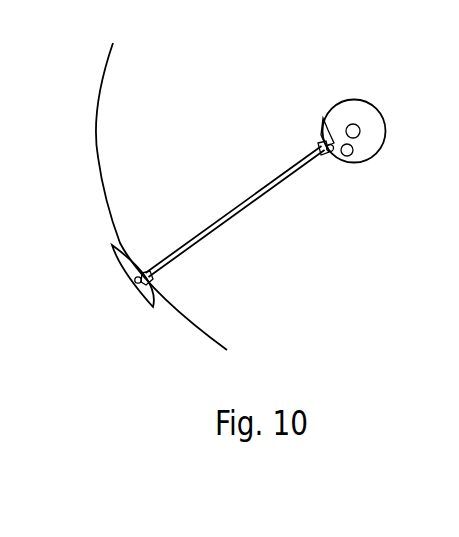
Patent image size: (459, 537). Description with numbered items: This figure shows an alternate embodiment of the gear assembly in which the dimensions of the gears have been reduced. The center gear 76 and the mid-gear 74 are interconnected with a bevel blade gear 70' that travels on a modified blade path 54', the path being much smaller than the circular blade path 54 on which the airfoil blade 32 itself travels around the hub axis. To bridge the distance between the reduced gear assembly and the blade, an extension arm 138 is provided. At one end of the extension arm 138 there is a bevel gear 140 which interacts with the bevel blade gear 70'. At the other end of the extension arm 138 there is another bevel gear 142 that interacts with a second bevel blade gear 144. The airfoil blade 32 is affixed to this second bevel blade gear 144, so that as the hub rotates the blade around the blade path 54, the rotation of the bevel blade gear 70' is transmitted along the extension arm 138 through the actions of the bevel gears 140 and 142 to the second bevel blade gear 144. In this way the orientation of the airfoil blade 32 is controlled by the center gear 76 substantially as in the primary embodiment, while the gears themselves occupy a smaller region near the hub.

The blade path 54 is at (161, 196).
The airfoil blade 32 is at (128, 272).
The second bevel blade gear 144 is at (136, 286).
The bevel gear 142 is at (150, 278).
The extension arm 138 is at (233, 217).
The bevel gear 140 is at (312, 163).
The bevel blade gear 70' is at (294, 123).
The modified blade path 54' is at (385, 131).
The center gear 76 is at (356, 132).
The mid-gear 74 is at (341, 155).